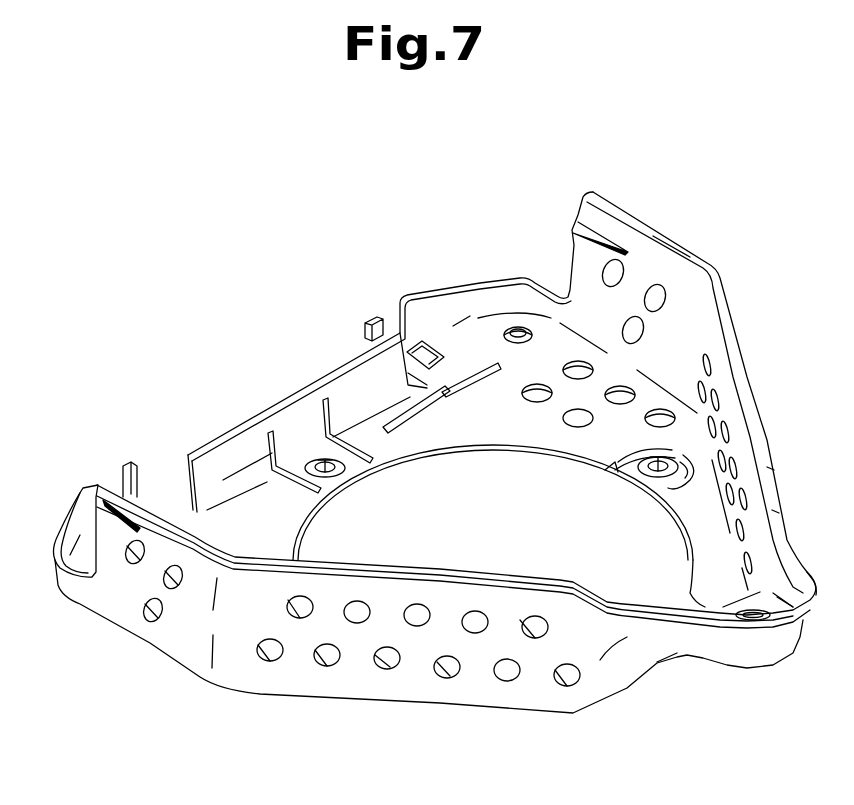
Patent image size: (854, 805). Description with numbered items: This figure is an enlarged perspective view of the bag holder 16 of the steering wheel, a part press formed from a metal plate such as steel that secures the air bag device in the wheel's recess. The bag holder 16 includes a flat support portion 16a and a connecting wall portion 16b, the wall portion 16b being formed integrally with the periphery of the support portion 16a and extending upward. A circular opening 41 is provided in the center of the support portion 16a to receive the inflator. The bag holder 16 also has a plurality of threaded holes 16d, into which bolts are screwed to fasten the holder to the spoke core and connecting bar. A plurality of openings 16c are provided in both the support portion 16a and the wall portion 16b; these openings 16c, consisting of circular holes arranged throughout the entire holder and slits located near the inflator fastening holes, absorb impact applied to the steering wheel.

The bag holder 16 is at (433, 218).
The support portion 16a is at (478, 436).
The connecting wall portion 16b is at (238, 640).
The openings 16c is at (323, 405).
The threaded holes 16d is at (520, 330).
The circular opening 41 is at (378, 458).